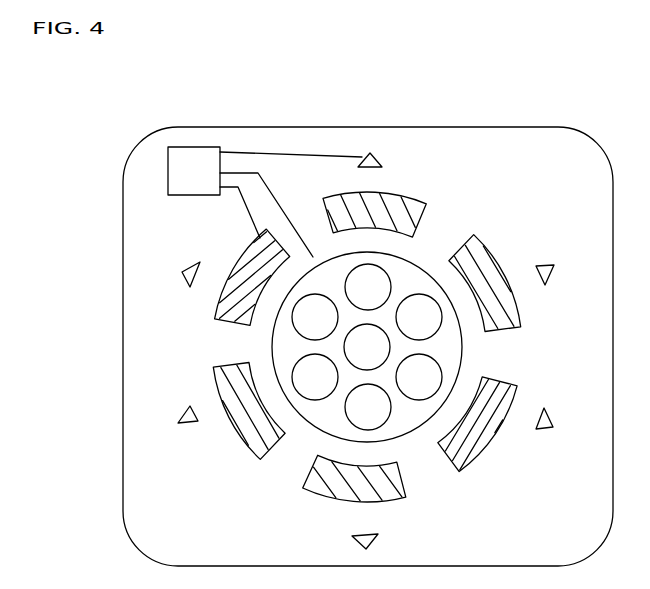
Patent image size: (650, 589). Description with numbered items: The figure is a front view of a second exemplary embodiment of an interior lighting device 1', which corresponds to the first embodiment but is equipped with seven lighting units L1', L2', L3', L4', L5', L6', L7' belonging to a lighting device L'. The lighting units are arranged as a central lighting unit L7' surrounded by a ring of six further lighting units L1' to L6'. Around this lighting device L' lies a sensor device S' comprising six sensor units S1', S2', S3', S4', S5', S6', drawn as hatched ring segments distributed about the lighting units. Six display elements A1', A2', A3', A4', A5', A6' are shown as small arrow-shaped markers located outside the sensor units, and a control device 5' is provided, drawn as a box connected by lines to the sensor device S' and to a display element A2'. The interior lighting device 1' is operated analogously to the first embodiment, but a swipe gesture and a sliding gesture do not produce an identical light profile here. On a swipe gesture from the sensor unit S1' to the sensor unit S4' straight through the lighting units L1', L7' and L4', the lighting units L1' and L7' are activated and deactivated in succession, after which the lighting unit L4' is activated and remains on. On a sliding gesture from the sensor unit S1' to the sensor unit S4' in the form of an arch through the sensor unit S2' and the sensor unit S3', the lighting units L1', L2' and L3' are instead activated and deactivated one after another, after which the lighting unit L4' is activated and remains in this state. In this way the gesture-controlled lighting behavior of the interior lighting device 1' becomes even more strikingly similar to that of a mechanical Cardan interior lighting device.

The interior lighting device 1' is at (368, 313).
The control device 5' is at (265, 171).
The sensor device S' is at (352, 347).
The sensor unit S1' is at (225, 277).
The sensor unit S2' is at (375, 191).
The sensor unit S3' is at (487, 274).
The sensor unit S4' is at (491, 445).
The sensor unit S5' is at (373, 502).
The sensor unit S6' is at (223, 415).
The lighting device L' is at (376, 353).
The lighting unit L1' is at (276, 326).
The lighting unit L2' is at (342, 262).
The lighting unit L3' is at (424, 285).
The lighting unit L4' is at (457, 377).
The lighting unit L5' is at (394, 438).
The lighting unit L6' is at (308, 411).
The lighting unit L7' is at (458, 347).
The display element A1' is at (169, 287).
The display element A2' is at (390, 126).
The display element A3' is at (552, 251).
The display element A4' is at (553, 444).
The display element A5' is at (337, 545).
The display element A6' is at (175, 396).